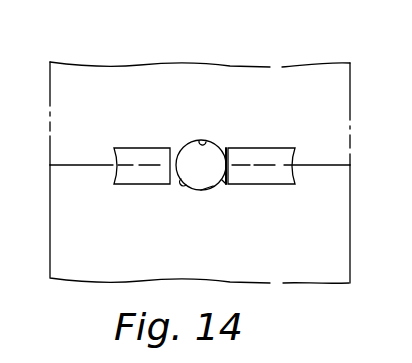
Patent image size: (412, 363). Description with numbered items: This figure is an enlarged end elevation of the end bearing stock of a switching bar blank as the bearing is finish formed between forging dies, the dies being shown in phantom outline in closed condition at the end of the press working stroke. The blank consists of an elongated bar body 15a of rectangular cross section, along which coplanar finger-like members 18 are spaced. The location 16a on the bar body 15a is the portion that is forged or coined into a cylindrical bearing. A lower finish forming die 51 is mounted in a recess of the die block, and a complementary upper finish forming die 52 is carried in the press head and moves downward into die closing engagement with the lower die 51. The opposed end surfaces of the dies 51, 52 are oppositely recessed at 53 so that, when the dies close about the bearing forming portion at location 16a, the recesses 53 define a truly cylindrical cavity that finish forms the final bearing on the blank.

The lower finish forming die 51 is at (58, 257).
The upper finish forming die 52 is at (62, 99).
The recess 53 is at (204, 144).
The finger-like member 18 is at (305, 226).
The bar body 15a is at (255, 225).
The bearing forming location 16a is at (207, 186).